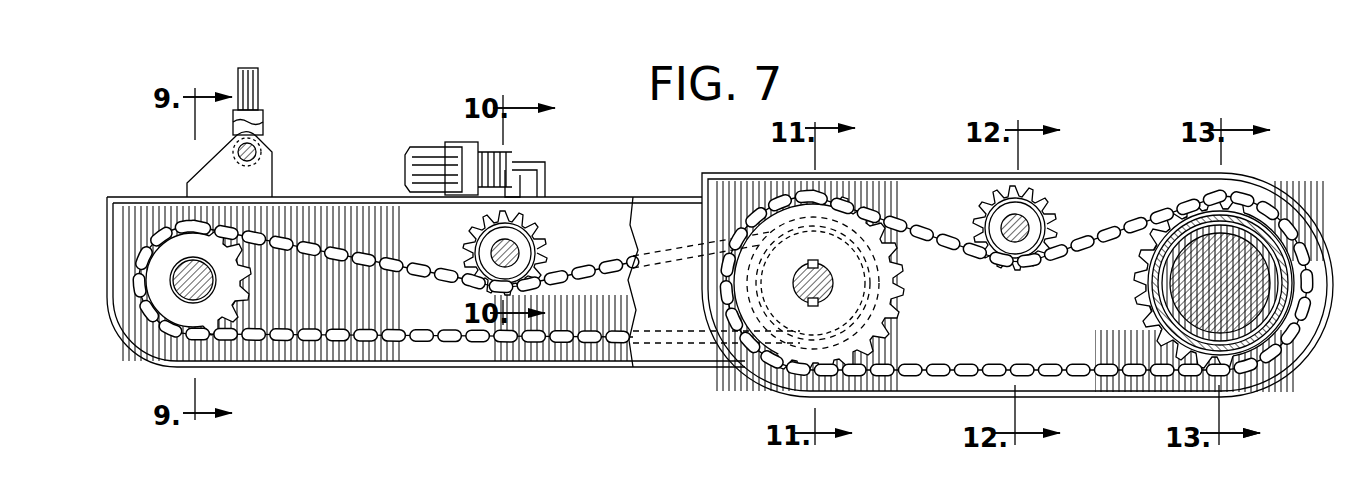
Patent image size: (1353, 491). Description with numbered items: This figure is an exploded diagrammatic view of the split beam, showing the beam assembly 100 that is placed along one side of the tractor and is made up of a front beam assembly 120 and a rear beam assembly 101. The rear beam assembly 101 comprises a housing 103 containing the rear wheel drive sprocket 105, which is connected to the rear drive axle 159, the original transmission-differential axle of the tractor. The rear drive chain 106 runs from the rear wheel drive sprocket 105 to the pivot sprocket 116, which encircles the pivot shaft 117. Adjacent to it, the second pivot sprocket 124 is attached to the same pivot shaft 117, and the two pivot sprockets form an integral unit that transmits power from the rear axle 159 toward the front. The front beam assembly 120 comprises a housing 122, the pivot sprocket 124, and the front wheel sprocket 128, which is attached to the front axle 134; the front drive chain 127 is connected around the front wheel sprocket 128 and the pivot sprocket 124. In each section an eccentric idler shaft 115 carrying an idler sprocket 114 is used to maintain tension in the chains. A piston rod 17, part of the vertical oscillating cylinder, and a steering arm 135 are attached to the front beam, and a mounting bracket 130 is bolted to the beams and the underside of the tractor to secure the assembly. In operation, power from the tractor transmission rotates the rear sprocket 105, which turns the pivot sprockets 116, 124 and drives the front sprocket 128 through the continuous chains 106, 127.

The piston rod 17 is at (254, 92).
The beam assembly 100 is at (858, 165).
The rear beam assembly 101 is at (1088, 170).
The housing 103 is at (1125, 174).
The rear wheel drive sprocket 105 is at (1158, 340).
The rear drive chain 106 is at (1065, 372).
The idler sprocket 114 is at (468, 245).
The eccentric idler shaft 115 is at (525, 275).
The pivot sprocket 116 is at (905, 212).
The pivot shaft 117 is at (798, 300).
The front beam assembly 120 is at (566, 196).
The housing 122 is at (612, 196).
The pivot sprocket 124 is at (770, 240).
The front drive chain 127 is at (325, 245).
The front wheel sprocket 128 is at (177, 315).
The mounting bracket 130 is at (893, 393).
The front axle 134 is at (205, 290).
The steering arm 135 is at (430, 148).
The rear drive axle 159 is at (1228, 300).